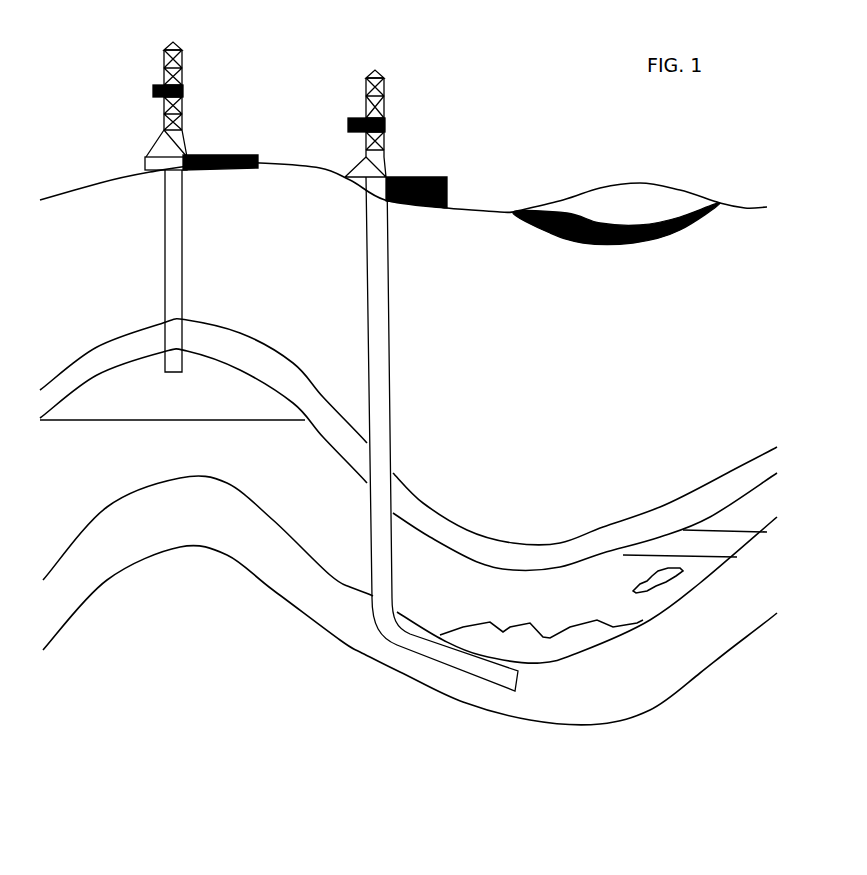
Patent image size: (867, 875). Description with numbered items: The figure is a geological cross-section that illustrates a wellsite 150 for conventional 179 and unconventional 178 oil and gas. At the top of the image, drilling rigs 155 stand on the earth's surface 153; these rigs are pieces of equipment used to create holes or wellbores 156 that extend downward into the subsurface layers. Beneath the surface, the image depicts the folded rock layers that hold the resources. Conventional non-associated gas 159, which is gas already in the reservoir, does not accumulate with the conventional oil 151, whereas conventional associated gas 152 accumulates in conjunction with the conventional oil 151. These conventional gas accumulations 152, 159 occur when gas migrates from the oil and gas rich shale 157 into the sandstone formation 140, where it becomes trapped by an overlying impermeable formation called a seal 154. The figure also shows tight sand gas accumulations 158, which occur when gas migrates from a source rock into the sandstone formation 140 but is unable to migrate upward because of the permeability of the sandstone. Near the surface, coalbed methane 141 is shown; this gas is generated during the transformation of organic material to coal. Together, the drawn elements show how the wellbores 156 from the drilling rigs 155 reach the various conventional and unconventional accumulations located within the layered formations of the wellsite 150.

The sandstone formation 140 is at (336, 480).
The coalbed methane 141 is at (575, 228).
The wellsite 150 is at (403, 253).
The conventional oil 151 is at (713, 547).
The conventional associated gas 152 is at (759, 507).
The earth's surface 153 is at (497, 212).
The seal 154 is at (467, 537).
The drilling rigs 155 is at (168, 117).
The wellbores 156 is at (172, 268).
The oil and gas rich shale 157 is at (285, 562).
The tight sand gas accumulations 158 is at (525, 618).
The conventional non-associated gas 159 is at (126, 387).
The unconventional oil and gas 178 is at (431, 364).
The conventional oil and gas 179 is at (201, 189).